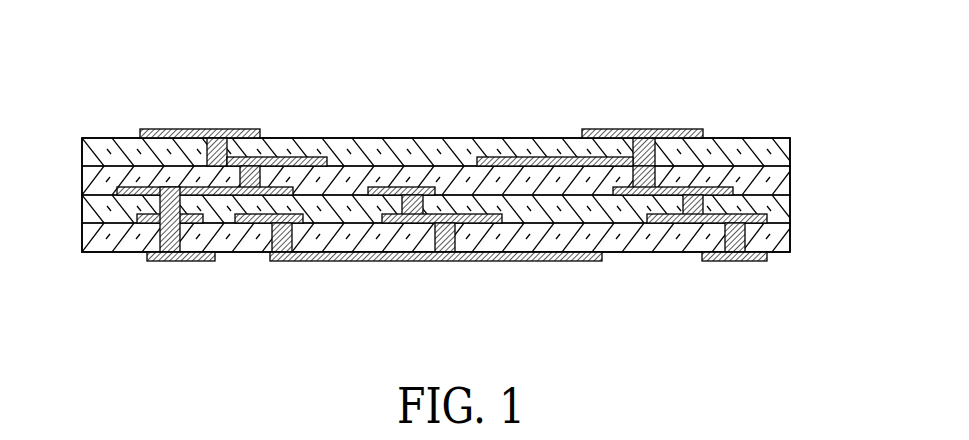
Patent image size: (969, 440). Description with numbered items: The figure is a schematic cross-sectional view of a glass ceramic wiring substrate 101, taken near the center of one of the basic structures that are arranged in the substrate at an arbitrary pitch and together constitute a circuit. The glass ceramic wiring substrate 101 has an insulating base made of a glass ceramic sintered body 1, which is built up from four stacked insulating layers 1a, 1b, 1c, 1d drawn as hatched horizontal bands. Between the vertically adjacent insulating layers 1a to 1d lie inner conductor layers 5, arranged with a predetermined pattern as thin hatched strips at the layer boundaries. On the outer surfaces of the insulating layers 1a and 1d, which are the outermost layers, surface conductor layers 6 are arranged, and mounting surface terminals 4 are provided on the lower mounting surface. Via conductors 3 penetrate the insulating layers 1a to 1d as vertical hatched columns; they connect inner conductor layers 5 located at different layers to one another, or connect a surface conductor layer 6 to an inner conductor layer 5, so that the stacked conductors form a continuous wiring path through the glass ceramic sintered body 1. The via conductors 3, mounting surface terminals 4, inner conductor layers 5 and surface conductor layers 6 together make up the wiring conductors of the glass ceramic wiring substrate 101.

The glass ceramic wiring substrate 101 is at (778, 100).
The glass ceramic sintered body 1 is at (645, 256).
The insulating layer 1a is at (784, 151).
The insulating layer 1b is at (784, 180).
The insulating layer 1c is at (784, 210).
The insulating layer 1d is at (784, 240).
The via conductor 3 is at (160, 203).
The mounting surface terminal 4 is at (190, 261).
The inner conductor layer 5 is at (500, 157).
The surface conductor layer 6 is at (612, 128).